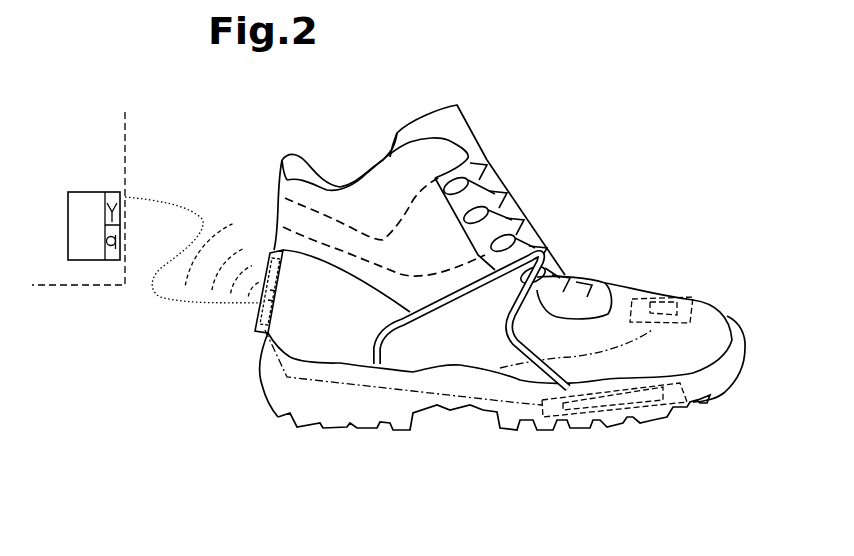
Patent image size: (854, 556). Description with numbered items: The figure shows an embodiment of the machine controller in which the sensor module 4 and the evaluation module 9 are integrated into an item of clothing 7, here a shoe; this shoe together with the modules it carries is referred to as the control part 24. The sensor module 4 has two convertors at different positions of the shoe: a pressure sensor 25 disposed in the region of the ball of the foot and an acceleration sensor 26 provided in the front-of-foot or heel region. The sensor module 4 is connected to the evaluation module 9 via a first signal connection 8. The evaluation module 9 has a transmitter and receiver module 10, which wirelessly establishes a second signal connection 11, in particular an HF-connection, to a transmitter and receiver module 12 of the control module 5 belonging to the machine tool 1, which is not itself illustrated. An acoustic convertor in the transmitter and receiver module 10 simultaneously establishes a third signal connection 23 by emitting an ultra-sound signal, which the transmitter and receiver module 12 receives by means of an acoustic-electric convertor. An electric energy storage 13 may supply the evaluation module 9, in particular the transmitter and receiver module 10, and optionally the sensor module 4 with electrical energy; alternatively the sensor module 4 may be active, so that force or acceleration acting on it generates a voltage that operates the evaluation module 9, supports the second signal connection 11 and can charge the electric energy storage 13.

The machine tool 1 is at (78, 292).
The sensor module 4 is at (688, 297).
The control module 5 is at (80, 200).
The item of clothing 7 is at (540, 165).
The first signal connection 8 is at (376, 390).
The evaluation module 9 is at (252, 342).
The transmitter and receiver module 10 is at (258, 305).
The second signal connection 11 is at (163, 203).
The transmitter and receiver module 12 is at (110, 188).
The electric energy storage 13 is at (270, 268).
The third signal connection 23 is at (228, 216).
The control part 24 is at (573, 167).
The pressure sensor 25 is at (585, 405).
The acceleration sensor 26 is at (658, 293).